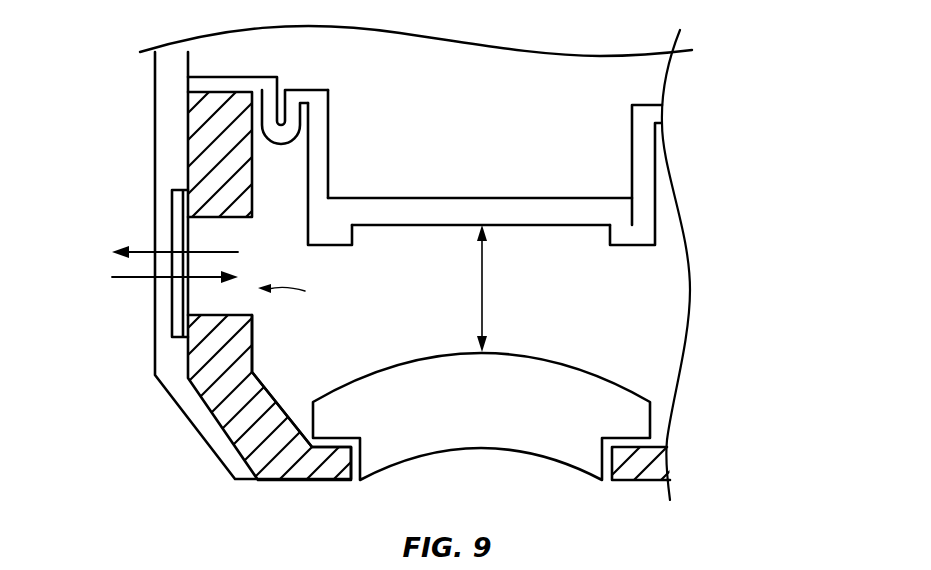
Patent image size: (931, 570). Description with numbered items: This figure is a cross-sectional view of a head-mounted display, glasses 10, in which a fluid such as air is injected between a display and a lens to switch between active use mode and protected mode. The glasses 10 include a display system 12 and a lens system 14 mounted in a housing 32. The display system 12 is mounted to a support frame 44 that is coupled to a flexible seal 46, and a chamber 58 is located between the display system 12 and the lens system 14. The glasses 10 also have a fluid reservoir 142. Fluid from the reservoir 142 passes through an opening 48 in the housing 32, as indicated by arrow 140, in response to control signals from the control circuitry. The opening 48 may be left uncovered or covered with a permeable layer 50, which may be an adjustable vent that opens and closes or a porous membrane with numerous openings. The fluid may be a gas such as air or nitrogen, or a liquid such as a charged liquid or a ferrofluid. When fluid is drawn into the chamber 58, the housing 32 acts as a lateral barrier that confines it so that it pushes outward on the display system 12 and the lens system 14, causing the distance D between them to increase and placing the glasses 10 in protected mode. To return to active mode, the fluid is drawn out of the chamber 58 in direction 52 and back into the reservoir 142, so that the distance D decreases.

The glasses 10 is at (744, 79).
The display system 12 is at (522, 207).
The lens system 14 is at (550, 357).
The housing 32 is at (198, 128).
The support frame 44 is at (320, 137).
The flexible seal 46 is at (248, 83).
The opening 48 is at (297, 292).
The permeable layer 50 is at (178, 296).
The direction 52 is at (143, 250).
The chamber 58 is at (667, 277).
The arrow 140 is at (126, 277).
The reservoir 142 is at (175, 382).
The distance D is at (490, 288).